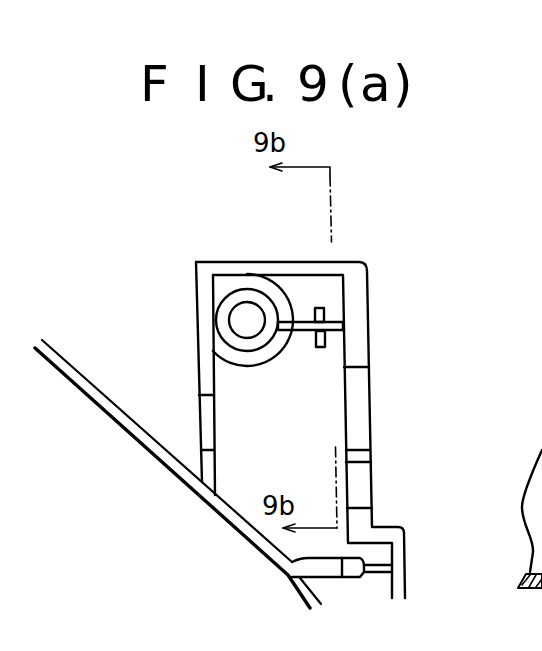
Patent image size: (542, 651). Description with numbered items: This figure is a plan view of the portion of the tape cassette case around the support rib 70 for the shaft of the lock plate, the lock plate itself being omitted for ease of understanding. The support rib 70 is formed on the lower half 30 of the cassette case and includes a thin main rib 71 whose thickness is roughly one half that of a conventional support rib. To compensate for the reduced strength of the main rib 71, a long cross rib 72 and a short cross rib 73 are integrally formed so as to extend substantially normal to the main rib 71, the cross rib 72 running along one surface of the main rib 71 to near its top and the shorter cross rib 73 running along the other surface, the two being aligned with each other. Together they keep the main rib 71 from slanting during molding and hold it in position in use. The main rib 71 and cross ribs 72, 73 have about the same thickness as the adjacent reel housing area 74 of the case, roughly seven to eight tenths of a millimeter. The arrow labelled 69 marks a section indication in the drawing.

The lower half 30 is at (386, 425).
The rib 69 is at (313, 491).
The support rib 70 is at (313, 302).
The main rib 71 is at (308, 324).
The cross rib 72 is at (327, 309).
The cross rib 73 is at (325, 339).
The reel housing area 74 is at (155, 453).